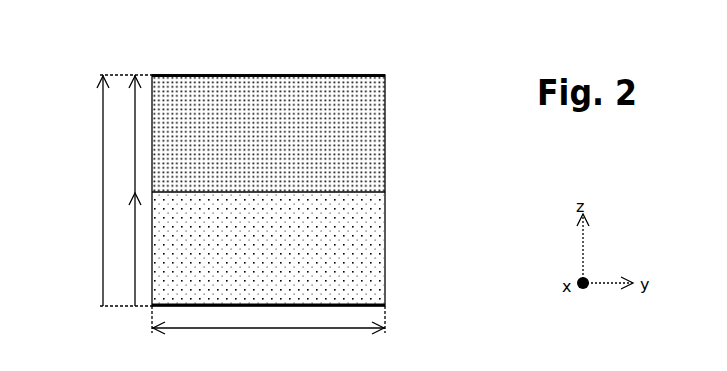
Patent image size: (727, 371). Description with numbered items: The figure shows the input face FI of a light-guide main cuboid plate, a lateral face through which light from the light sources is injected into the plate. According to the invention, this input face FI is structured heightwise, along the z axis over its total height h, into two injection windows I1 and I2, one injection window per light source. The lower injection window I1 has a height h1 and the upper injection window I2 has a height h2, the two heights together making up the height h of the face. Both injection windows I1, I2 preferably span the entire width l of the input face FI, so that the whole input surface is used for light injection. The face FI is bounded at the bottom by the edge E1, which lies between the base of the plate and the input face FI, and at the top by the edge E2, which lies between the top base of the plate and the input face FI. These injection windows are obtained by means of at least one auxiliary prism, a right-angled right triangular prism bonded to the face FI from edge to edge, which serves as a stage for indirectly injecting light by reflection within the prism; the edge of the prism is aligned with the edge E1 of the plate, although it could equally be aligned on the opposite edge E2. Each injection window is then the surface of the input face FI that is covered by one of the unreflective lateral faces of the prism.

The input face FI is at (392, 168).
The second injection window I2 is at (268, 133).
The first injection window I1 is at (268, 249).
The edge of the plate between top base and input face E2 is at (243, 75).
The edge of the plate between base and input face E1 is at (352, 307).
The height h is at (117, 190).
The height of second injection window h2 is at (124, 133).
The height of first injection window h1 is at (124, 249).
The width l is at (268, 335).